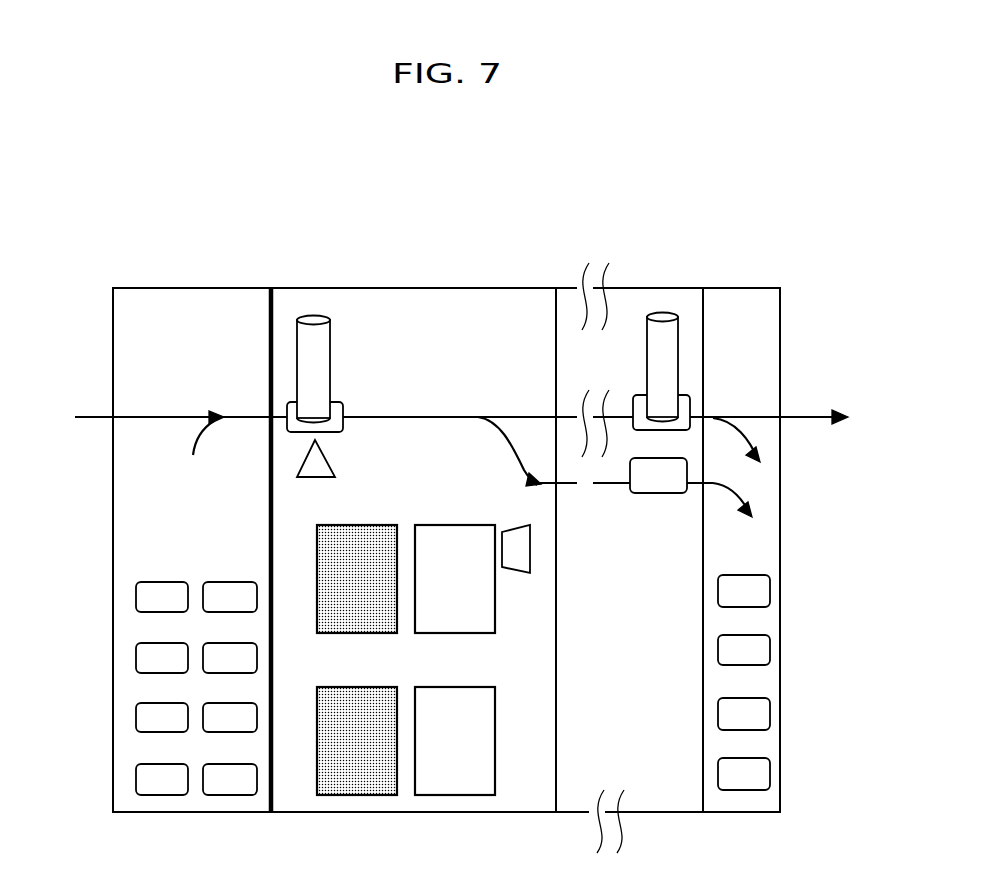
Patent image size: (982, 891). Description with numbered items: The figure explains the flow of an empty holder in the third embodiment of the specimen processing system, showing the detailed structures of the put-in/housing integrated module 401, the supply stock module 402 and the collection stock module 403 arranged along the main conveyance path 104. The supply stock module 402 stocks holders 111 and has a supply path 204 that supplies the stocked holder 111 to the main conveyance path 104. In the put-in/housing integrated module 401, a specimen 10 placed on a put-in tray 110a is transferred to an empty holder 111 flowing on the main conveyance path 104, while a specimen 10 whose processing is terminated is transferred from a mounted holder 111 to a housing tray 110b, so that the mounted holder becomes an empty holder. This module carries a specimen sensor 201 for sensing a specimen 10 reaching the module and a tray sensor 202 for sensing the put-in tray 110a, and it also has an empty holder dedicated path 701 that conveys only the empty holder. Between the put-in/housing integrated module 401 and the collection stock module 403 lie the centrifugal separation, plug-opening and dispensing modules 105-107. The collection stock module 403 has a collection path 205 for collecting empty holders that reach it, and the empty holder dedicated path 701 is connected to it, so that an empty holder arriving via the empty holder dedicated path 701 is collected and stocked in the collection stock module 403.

The supply stock module 402 is at (180, 307).
The put-in/housing integrated module 401 is at (432, 307).
The centrifugal separation module, plug-opening module and dispensing module 105-107 is at (662, 302).
The collection stock module 403 is at (747, 308).
The main conveyance path 104 is at (512, 417).
The empty holder dedicated path 701 is at (495, 445).
The supply path 204 is at (203, 438).
The collection path 205 is at (735, 433).
The holder 111 is at (340, 410).
The specimen 10 is at (318, 352).
The specimen sensor 201 is at (325, 465).
The tray sensor 202 is at (518, 560).
The housing tray 110b is at (352, 758).
The put-in tray 110a is at (460, 755).